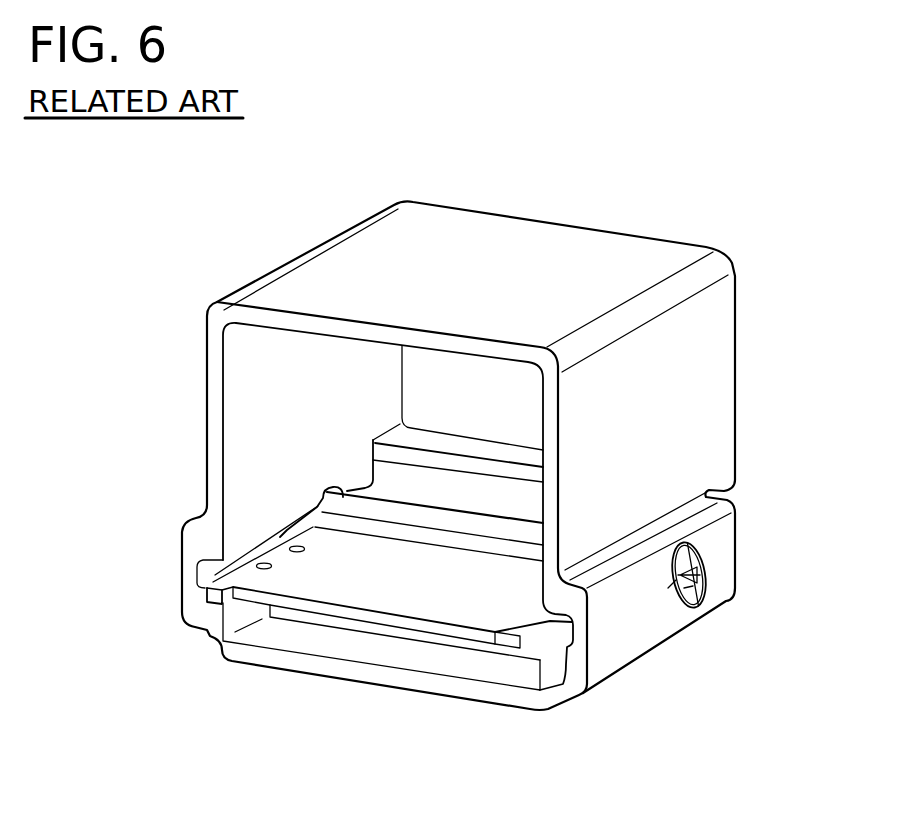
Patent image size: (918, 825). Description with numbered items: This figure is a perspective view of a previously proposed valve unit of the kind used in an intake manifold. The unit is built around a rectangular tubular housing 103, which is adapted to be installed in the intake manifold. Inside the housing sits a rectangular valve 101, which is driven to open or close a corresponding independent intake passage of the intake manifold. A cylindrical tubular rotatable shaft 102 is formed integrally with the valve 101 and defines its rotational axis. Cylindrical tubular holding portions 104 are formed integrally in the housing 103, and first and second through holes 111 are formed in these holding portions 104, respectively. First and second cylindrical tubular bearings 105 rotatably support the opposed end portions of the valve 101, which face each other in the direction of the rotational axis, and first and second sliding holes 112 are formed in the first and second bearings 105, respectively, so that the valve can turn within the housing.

The rectangular valve 101 is at (400, 595).
The cylindrical tubular rotatable shaft 102 is at (497, 520).
The rectangular tubular housing 103 is at (510, 237).
The cylindrical tubular holding portion 104 is at (707, 556).
The bearing 105 is at (707, 585).
The through hole 111 is at (673, 578).
The sliding hole 112 is at (697, 610).